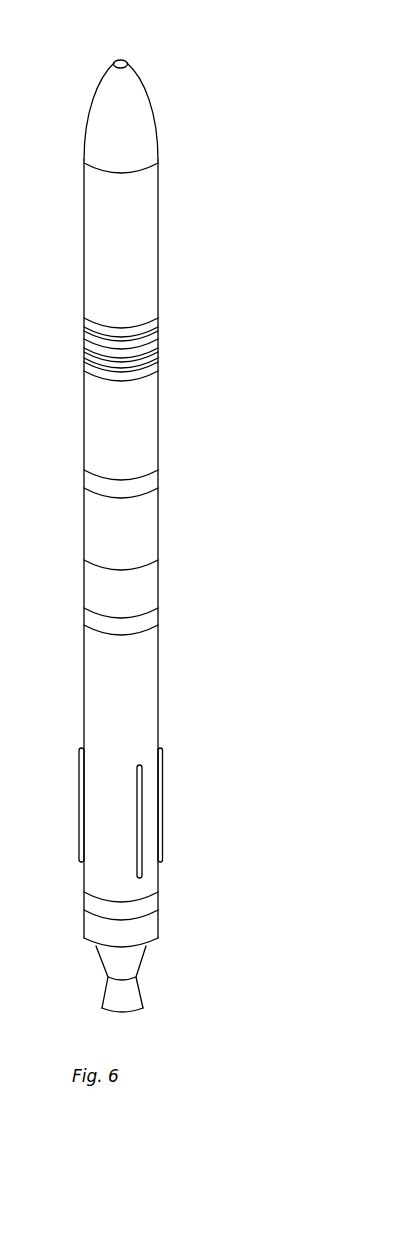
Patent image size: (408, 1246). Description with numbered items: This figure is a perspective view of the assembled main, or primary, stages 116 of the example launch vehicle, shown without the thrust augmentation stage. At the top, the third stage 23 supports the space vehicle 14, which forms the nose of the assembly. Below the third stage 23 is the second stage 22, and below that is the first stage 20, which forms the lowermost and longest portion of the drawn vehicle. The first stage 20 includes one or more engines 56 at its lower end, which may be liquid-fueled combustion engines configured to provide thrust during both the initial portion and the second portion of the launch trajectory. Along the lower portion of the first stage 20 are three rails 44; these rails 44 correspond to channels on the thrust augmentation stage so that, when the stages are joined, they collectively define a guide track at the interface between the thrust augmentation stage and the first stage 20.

The main stages 116 is at (201, 50).
The space vehicle 14 is at (142, 119).
The third stage 23 is at (158, 241).
The second stage 22 is at (158, 410).
The first stage 20 is at (160, 681).
The rails 44 is at (81, 779).
The engines 56 is at (102, 1008).